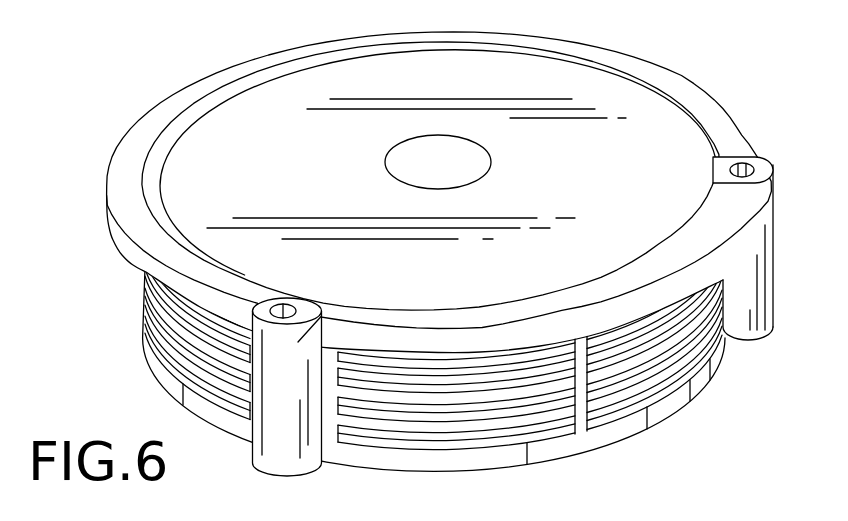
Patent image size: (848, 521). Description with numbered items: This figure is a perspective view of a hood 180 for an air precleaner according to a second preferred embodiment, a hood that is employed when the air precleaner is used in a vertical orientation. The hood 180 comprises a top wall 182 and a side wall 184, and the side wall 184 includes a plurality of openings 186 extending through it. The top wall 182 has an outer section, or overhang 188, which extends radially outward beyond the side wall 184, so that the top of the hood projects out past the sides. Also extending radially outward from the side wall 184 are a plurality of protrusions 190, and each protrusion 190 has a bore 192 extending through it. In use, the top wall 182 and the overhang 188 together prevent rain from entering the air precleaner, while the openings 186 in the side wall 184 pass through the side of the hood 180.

The hood 180 is at (435, 257).
The top wall 182 is at (533, 68).
The side wall 184 is at (580, 442).
The openings 186 is at (653, 386).
The overhang 188 is at (142, 238).
The protrusions 190 is at (760, 283).
The bore 192 is at (750, 158).